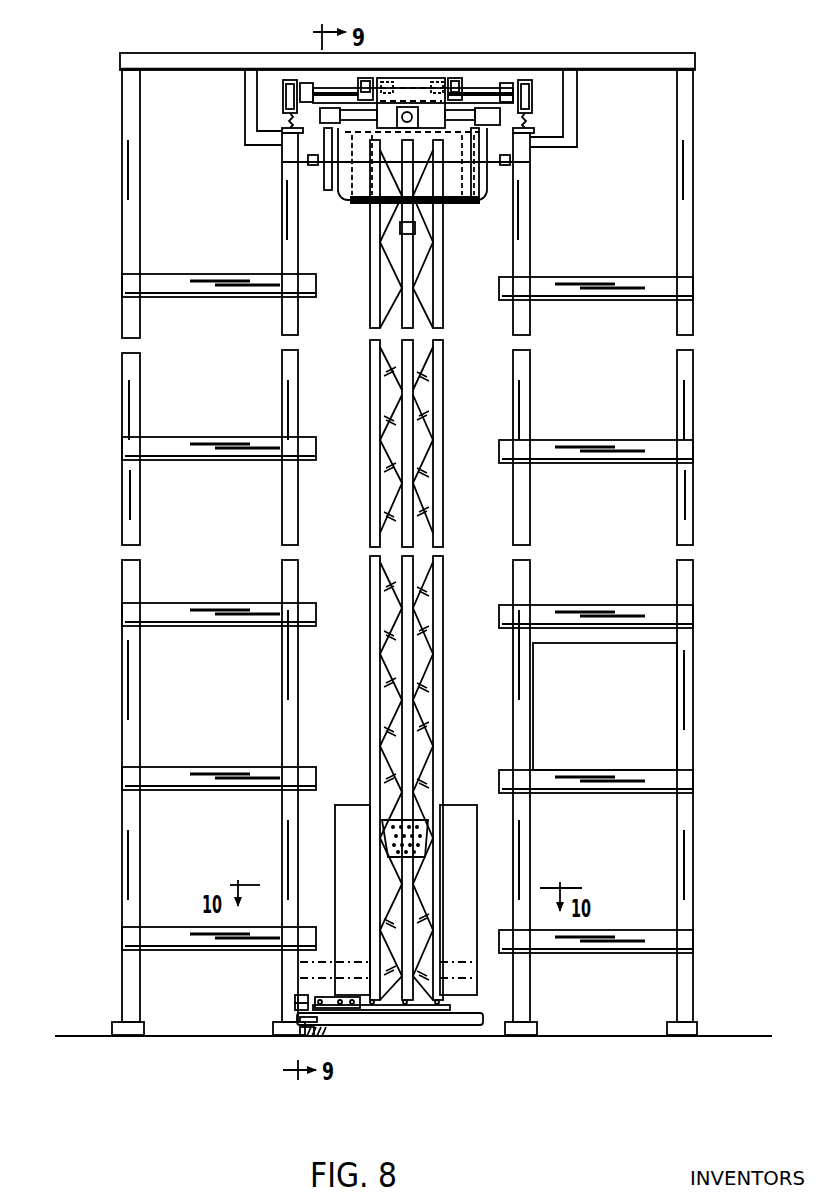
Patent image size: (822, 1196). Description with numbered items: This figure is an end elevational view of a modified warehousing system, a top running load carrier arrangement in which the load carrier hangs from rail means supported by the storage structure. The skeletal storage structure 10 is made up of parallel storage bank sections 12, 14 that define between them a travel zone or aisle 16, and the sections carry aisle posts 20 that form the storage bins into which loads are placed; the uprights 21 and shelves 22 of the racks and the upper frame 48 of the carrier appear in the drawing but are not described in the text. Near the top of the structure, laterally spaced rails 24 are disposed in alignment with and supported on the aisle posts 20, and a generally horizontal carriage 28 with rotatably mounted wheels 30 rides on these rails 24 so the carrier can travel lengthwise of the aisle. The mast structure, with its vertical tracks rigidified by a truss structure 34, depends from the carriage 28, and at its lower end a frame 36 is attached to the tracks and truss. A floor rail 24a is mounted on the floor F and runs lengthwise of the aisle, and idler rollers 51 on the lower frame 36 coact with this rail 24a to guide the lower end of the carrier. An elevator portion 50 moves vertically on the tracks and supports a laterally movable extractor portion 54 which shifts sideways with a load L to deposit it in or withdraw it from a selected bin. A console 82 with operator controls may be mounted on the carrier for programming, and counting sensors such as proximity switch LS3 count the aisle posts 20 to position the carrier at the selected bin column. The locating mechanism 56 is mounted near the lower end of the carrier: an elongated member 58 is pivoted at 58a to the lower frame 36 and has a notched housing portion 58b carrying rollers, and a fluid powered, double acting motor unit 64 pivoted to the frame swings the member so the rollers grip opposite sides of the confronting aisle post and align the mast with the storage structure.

The skeletal storage structure 10 is at (707, 112).
The storage bank section 12 is at (118, 332).
The storage bank section 14 is at (701, 326).
The travel zone or aisle 16 is at (503, 262).
The aisle post 20 is at (296, 413).
The upright post 21 is at (122, 748).
The shelf 22 is at (122, 283).
The rail means 24 is at (330, 145).
The floor rail 24a is at (337, 1027).
The carriage 28 is at (476, 92).
The wheels 30 is at (294, 80).
The truss structure 34 is at (443, 665).
The lower frame 36 is at (478, 1022).
The upper carriage frame 48 is at (360, 205).
The elevator portion 50 is at (458, 812).
The idler rollers 51 is at (300, 1033).
The extractor portion 54 is at (457, 965).
The locating mechanism 56 is at (314, 984).
The elongated member 58 is at (252, 995).
The pivot 58a is at (296, 1000).
The housing portion 58b is at (303, 997).
The motor unit 64 is at (340, 998).
The console 82 is at (428, 855).
The load L is at (643, 708).
The proximity switch LS3 is at (308, 160).
The floor F is at (722, 1037).